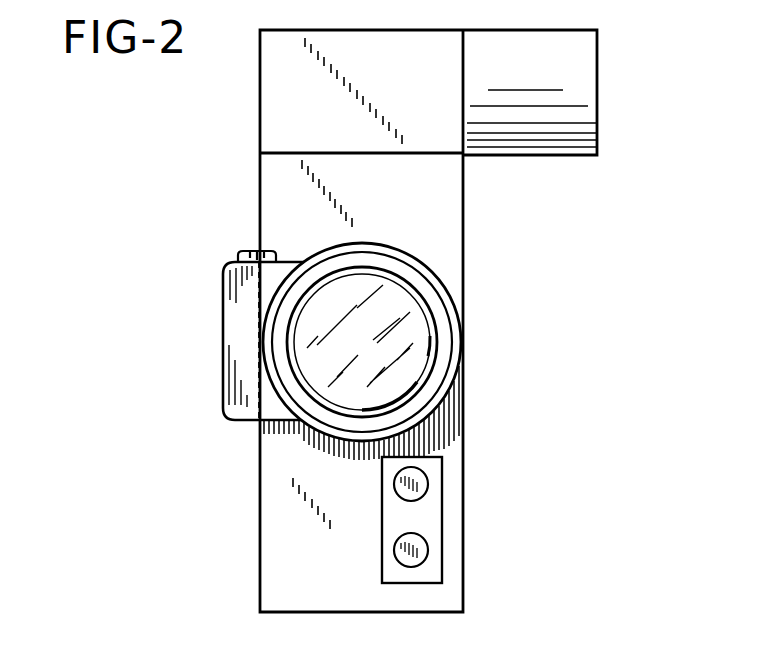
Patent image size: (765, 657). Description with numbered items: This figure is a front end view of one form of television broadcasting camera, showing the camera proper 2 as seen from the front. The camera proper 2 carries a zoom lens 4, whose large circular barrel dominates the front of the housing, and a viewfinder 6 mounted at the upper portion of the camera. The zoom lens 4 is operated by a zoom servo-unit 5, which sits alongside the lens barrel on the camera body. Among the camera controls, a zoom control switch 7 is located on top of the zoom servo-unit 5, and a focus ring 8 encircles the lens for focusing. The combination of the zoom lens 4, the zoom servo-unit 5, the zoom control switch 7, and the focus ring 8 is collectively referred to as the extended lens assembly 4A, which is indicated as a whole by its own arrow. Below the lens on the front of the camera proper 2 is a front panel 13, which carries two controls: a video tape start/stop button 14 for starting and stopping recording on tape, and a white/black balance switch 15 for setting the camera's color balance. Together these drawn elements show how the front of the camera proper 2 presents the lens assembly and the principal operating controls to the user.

The camera proper 2 is at (390, 197).
The zoom lens 4 is at (466, 341).
The extended lens assembly 4A is at (164, 297).
The zoom servo-unit 5 is at (236, 334).
The viewfinder 6 is at (578, 82).
The zoom control switch 7 is at (255, 250).
The focus ring 8 is at (444, 410).
The front panel 13 is at (395, 523).
The video tape start/stop button 14 is at (420, 484).
The white/black balance switch 15 is at (420, 550).